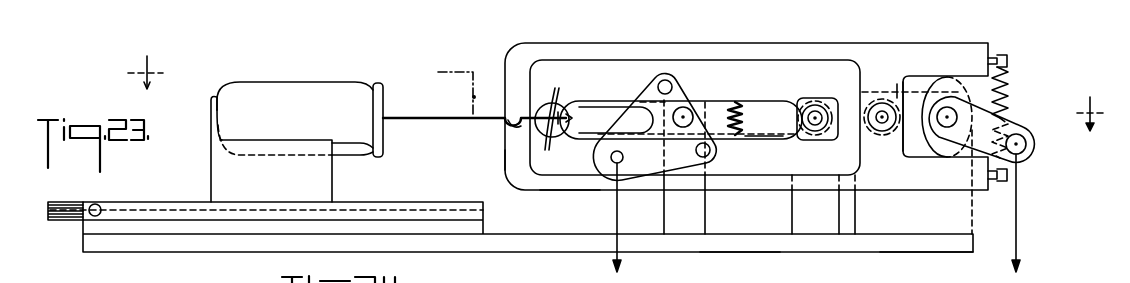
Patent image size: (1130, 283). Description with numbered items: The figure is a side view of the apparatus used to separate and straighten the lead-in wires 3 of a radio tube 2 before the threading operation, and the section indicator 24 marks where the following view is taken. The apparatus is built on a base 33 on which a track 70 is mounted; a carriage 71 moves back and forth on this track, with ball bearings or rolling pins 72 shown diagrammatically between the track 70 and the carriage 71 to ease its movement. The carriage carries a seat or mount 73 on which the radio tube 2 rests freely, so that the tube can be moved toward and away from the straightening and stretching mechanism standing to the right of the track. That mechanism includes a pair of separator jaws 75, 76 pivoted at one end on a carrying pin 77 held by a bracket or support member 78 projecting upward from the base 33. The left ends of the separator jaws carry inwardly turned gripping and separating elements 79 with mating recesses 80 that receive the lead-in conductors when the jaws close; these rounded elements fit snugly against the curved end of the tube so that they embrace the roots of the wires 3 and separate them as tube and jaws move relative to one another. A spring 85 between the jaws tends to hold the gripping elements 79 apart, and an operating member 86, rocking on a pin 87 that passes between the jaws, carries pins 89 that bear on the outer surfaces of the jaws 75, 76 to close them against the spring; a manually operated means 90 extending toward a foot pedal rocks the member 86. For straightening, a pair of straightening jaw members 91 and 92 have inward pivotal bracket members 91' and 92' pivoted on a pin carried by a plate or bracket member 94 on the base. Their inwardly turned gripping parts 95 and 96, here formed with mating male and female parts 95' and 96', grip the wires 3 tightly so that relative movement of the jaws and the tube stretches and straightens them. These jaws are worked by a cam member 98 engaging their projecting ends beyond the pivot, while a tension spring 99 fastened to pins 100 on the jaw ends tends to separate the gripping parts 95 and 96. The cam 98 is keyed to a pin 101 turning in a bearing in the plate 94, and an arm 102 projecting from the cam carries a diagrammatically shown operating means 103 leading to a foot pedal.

The radio tube 2 is at (326, 92).
The wires 3 is at (424, 110).
The section line 24 is at (615, 83).
The base 33 is at (738, 242).
The track 70 is at (407, 201).
The carriage 71 is at (52, 201).
The ball bearings or rolling pins 72 is at (100, 205).
The seat or mount 73 is at (211, 167).
The separator jaw 75 is at (705, 98).
The separator jaw 76 is at (758, 136).
The carrying pin 77 is at (817, 111).
The bracket or support member 78 is at (795, 208).
The gripping and separating elements 79 is at (575, 123).
The recesses 80 is at (548, 158).
The spring 85 is at (741, 107).
The operating member 86 is at (645, 180).
The pin 87 is at (683, 108).
The pins 89 is at (652, 82).
The manually operated means 90 is at (612, 213).
The straightening jaw member 91 is at (695, 97).
The pivotal bracket member 91' is at (911, 75).
The straightening jaw member 92 is at (560, 202).
The pivotal bracket member 92' is at (854, 135).
The plate or bracket member 94 is at (915, 218).
The gripping part 95 is at (713, 111).
The male part 95' is at (479, 103).
The gripping part 96 is at (487, 166).
The female part 96' is at (491, 138).
The cam member 98 is at (952, 85).
The tension spring 99 is at (1006, 99).
The pins 100 is at (1005, 58).
The pin 101 is at (944, 124).
The arm 102 is at (1030, 150).
The operating means 103 is at (1020, 213).